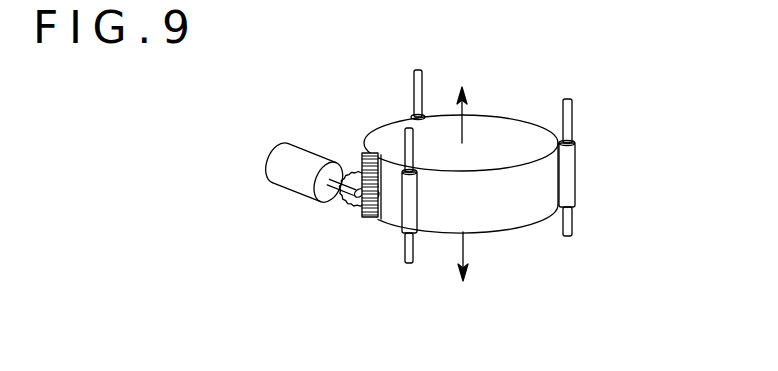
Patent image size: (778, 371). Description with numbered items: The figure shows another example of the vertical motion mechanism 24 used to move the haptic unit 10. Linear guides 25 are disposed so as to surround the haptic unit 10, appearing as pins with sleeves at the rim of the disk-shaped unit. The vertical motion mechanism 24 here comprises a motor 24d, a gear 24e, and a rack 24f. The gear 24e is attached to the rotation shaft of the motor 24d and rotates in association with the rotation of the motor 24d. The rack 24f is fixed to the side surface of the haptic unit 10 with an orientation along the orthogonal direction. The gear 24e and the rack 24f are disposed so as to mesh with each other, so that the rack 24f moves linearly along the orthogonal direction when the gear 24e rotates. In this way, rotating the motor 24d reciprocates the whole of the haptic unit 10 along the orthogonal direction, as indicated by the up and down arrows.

The haptic unit 10 is at (512, 119).
The vertical motion mechanism 24 is at (321, 219).
The motor 24d is at (292, 173).
The gear 24e is at (360, 213).
The rack 24f is at (363, 153).
The linear guides 25 is at (422, 85).